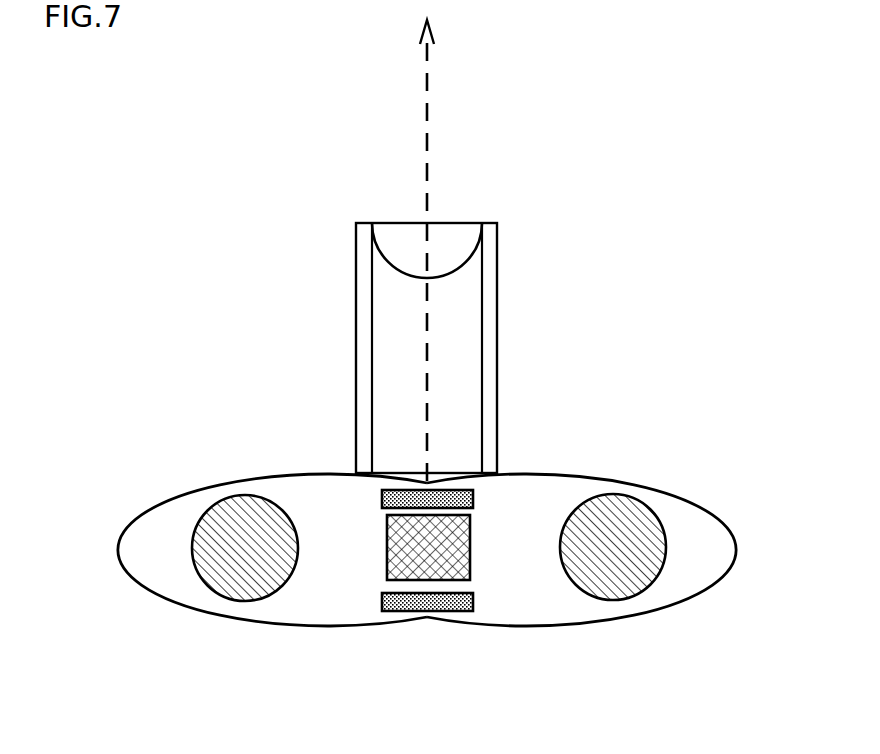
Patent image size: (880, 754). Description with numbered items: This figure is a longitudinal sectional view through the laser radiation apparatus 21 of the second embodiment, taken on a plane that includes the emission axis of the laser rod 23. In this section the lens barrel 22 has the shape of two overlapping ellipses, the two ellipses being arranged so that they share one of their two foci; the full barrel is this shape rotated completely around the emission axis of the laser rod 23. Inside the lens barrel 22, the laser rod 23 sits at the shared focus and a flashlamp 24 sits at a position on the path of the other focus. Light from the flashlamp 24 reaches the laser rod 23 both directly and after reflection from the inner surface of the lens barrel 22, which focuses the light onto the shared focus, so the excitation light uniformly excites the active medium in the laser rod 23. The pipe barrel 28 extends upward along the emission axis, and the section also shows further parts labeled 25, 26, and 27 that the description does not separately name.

The laser radiation apparatus 21 is at (247, 318).
The lens barrel 22 is at (195, 490).
The laser rod 23 is at (387, 535).
The flashlamp 24 is at (635, 510).
The lower plate 25 is at (428, 606).
The upper plate 26 is at (463, 497).
The lens 27 is at (453, 232).
The pipe barrel 28 is at (357, 298).